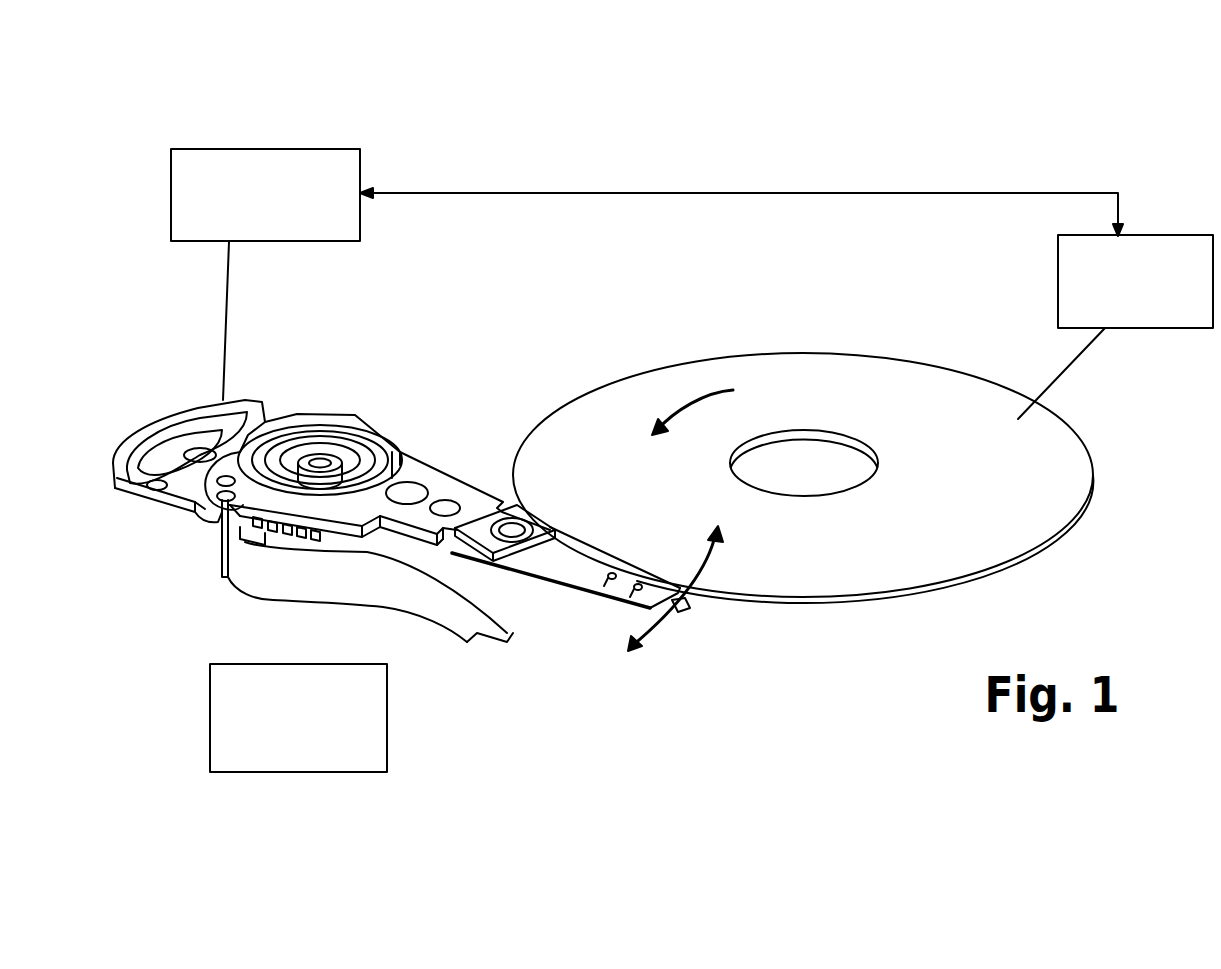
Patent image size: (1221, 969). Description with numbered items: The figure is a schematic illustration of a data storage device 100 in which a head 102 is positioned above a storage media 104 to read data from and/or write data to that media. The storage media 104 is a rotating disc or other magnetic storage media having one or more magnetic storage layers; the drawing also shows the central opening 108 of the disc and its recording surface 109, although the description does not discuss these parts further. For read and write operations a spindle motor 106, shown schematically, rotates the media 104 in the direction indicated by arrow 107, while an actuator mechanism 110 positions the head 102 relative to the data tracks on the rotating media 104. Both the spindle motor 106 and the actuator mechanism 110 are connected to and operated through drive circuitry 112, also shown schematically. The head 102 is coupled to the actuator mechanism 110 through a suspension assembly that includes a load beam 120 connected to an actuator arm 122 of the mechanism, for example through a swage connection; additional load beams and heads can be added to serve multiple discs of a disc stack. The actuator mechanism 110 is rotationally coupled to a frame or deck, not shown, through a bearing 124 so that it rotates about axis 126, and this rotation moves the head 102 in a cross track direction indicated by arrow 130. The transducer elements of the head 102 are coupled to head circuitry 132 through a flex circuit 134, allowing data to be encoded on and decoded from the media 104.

The data storage device 100 is at (996, 135).
The head 102 is at (685, 607).
The storage media 104 is at (941, 372).
The spindle motor 106 is at (1175, 234).
The arrow 107 is at (703, 398).
The disk central opening 108 is at (843, 430).
The disk surface 109 is at (810, 353).
The actuator mechanism 110 is at (345, 400).
The drive circuitry 112 is at (363, 160).
The load beam 120 is at (557, 560).
The actuator arm 122 is at (458, 484).
The bearing 124 is at (316, 456).
The axis 126 is at (322, 458).
The arrow 130 is at (707, 568).
The head circuitry 132 is at (387, 715).
The flex circuit 134 is at (298, 664).